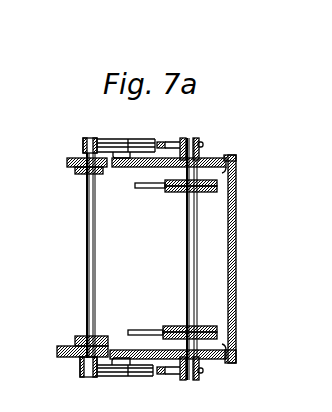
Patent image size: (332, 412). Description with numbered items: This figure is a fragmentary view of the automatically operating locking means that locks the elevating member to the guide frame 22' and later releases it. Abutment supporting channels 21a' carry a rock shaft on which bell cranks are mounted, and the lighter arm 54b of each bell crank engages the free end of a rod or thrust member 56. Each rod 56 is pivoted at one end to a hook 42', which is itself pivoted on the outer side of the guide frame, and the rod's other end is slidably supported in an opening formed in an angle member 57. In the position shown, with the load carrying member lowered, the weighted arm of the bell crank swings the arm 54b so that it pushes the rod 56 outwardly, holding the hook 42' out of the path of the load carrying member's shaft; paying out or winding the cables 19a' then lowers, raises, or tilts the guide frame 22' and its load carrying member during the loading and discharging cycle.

The bell crank arm 54b is at (84, 143).
The angle member 57 is at (137, 139).
The rod or thrust member 56 is at (143, 143).
The hook 42' is at (204, 261).
The guide frame 22' is at (192, 259).
The cables 19a' is at (172, 259).
The abutment supporting channels 21a' is at (75, 255).